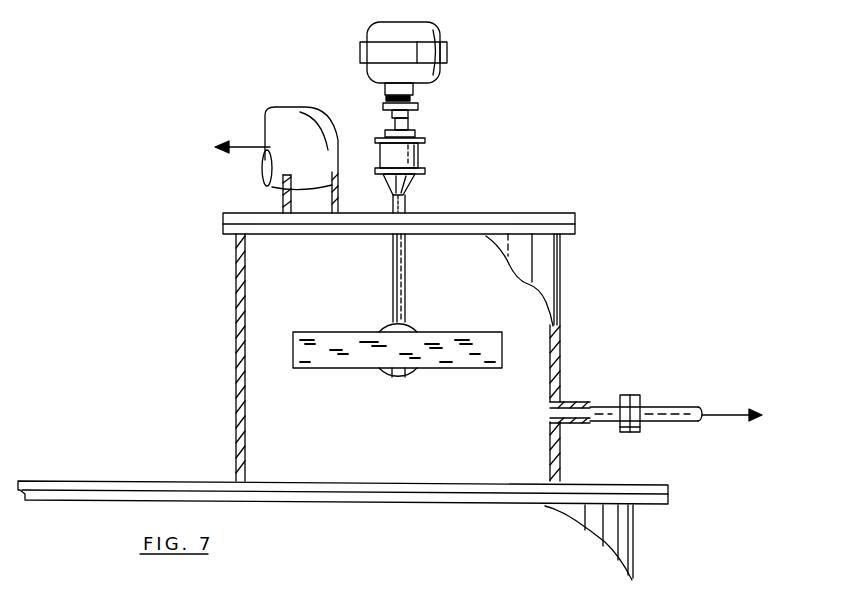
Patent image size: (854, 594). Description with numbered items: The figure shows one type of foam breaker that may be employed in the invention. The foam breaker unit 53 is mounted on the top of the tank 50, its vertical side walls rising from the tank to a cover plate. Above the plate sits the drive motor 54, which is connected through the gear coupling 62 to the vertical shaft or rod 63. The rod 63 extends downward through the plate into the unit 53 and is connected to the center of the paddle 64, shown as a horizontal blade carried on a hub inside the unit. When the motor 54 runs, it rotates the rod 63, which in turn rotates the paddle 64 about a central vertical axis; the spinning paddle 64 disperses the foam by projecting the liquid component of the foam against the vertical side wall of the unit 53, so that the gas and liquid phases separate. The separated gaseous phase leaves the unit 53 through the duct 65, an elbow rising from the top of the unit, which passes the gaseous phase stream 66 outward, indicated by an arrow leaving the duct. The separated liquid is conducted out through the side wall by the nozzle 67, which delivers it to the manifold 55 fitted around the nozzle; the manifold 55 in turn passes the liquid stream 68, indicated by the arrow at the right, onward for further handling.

The tank 50 is at (635, 524).
The foam breaker unit 53 is at (560, 262).
The drive motor 54 is at (440, 68).
The manifold 55 is at (662, 400).
The gear coupling 62 is at (418, 152).
The vertical shaft or rod 63 is at (406, 197).
The paddle 64 is at (443, 332).
The duct 65 is at (305, 107).
The gaseous phase stream 66 is at (240, 142).
The nozzle 67 is at (590, 403).
The liquid stream 68 is at (720, 418).